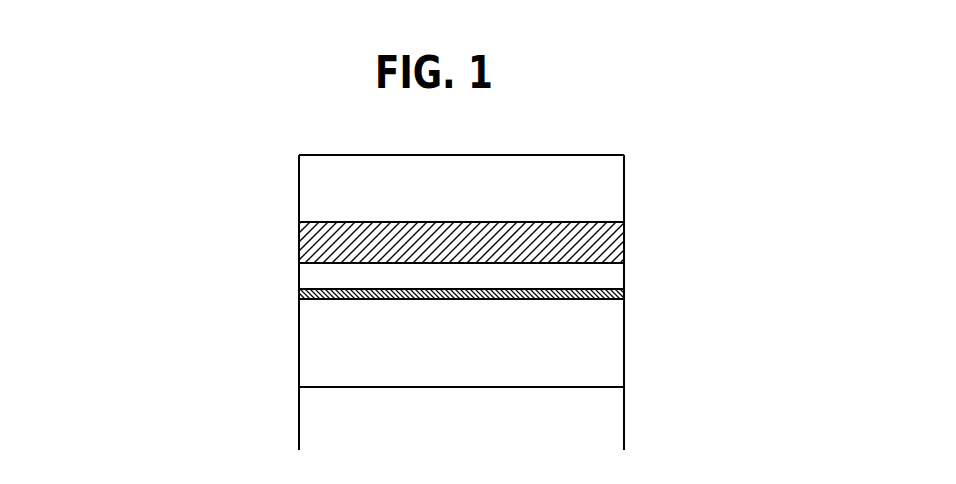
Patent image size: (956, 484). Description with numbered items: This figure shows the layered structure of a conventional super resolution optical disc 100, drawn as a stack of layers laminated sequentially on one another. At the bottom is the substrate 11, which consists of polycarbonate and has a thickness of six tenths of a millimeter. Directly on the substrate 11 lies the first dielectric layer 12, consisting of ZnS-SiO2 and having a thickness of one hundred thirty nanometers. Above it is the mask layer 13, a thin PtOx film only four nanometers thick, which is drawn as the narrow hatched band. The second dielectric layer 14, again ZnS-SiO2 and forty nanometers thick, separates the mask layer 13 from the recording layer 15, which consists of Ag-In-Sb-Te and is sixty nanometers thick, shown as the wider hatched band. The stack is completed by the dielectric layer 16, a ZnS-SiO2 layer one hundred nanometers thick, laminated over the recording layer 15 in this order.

The optical information recording medium 100 is at (354, 140).
The substrate 11 is at (461, 418).
The first dielectric layer 12 is at (327, 345).
The mask layer 13 is at (624, 295).
The second dielectric layer 14 is at (327, 275).
The recording layer 15 is at (598, 243).
The dielectric layer 16 is at (327, 187).